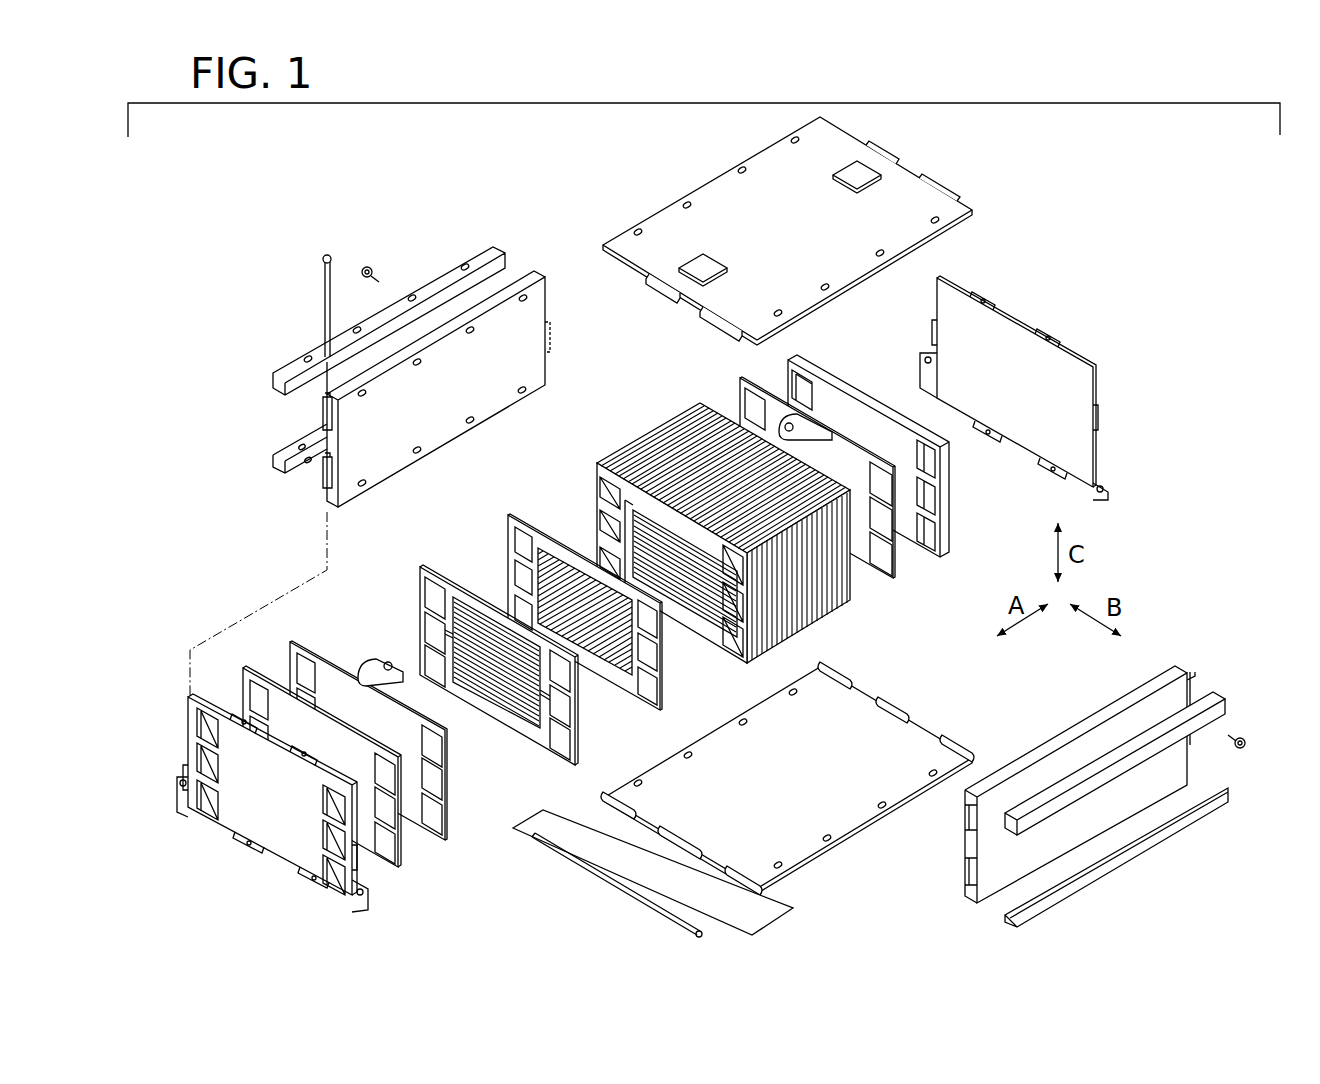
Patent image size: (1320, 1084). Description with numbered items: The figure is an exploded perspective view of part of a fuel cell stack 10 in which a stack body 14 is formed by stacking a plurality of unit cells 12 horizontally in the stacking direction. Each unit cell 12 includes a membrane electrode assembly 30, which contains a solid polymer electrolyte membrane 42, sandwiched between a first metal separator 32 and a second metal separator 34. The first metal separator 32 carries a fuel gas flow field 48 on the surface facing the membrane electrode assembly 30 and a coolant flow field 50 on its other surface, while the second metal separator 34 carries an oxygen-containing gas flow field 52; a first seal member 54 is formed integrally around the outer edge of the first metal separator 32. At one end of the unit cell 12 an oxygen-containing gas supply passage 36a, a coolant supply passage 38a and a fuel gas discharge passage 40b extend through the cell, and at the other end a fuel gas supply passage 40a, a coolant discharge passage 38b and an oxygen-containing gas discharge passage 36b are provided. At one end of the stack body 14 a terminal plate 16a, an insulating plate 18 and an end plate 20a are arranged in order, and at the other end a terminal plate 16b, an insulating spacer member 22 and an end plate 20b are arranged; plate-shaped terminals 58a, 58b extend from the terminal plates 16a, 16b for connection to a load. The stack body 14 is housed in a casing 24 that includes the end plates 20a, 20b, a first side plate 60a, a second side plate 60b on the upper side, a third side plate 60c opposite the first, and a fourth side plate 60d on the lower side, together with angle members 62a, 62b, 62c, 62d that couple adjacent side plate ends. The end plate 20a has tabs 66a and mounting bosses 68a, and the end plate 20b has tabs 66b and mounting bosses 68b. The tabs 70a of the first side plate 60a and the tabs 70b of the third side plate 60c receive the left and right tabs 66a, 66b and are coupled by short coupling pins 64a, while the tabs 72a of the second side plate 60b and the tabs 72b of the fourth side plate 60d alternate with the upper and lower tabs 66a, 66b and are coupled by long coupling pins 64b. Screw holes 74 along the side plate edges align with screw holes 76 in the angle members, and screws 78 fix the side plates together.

The fuel cell stack 10 is at (447, 191).
The unit cell 12 is at (717, 529).
The stack body 14 is at (711, 516).
The terminal plate 16a is at (368, 721).
The terminal plate 16b is at (819, 477).
The insulating plate 18 is at (262, 680).
The end plate 20a is at (282, 820).
The end plate 20b is at (1024, 388).
The insulating spacer member 22 is at (952, 505).
The casing 24 is at (781, 234).
The membrane electrode assembly 30 is at (630, 672).
The first metal separator 32 is at (481, 649).
The second metal separator 34 is at (684, 510).
The oxygen-containing gas supply passage 36a is at (195, 727).
The oxygen-containing gas discharge passage 36b is at (335, 880).
The coolant supply passage 38a is at (195, 757).
The coolant discharge passage 38b is at (326, 832).
The fuel gas supply passage 40a is at (326, 800).
The fuel gas discharge passage 40b is at (200, 796).
The solid polymer electrolyte membrane 42 is at (586, 606).
The fuel gas flow field 48 is at (495, 680).
The coolant flow field 50 is at (510, 692).
The oxygen-containing gas flow field 52 is at (650, 522).
The first seal member 54 is at (530, 737).
The terminal 58a is at (374, 666).
The terminal 58b is at (790, 434).
The first side plate 60a is at (1083, 783).
The second side plate 60b is at (700, 207).
The third side plate 60c is at (747, 557).
The fourth side plate 60d is at (787, 777).
The angle member 62a is at (1055, 790).
The angle member 62b is at (741, 561).
The angle member 62c is at (290, 470).
The angle member 62d is at (1195, 815).
The short coupling pin 64a is at (323, 310).
The long coupling pin 64b is at (580, 866).
The tab 66a is at (383, 880).
The tab 66b is at (932, 330).
The mounting boss 68a is at (183, 812).
The mounting boss 68b is at (925, 370).
The tab 70a is at (966, 805).
The tab 70b is at (324, 408).
The tab 72a is at (890, 165).
The tab 72b is at (895, 705).
The screw hole 74 is at (420, 447).
The screw hole 76 is at (410, 295).
The screw 78 is at (365, 266).